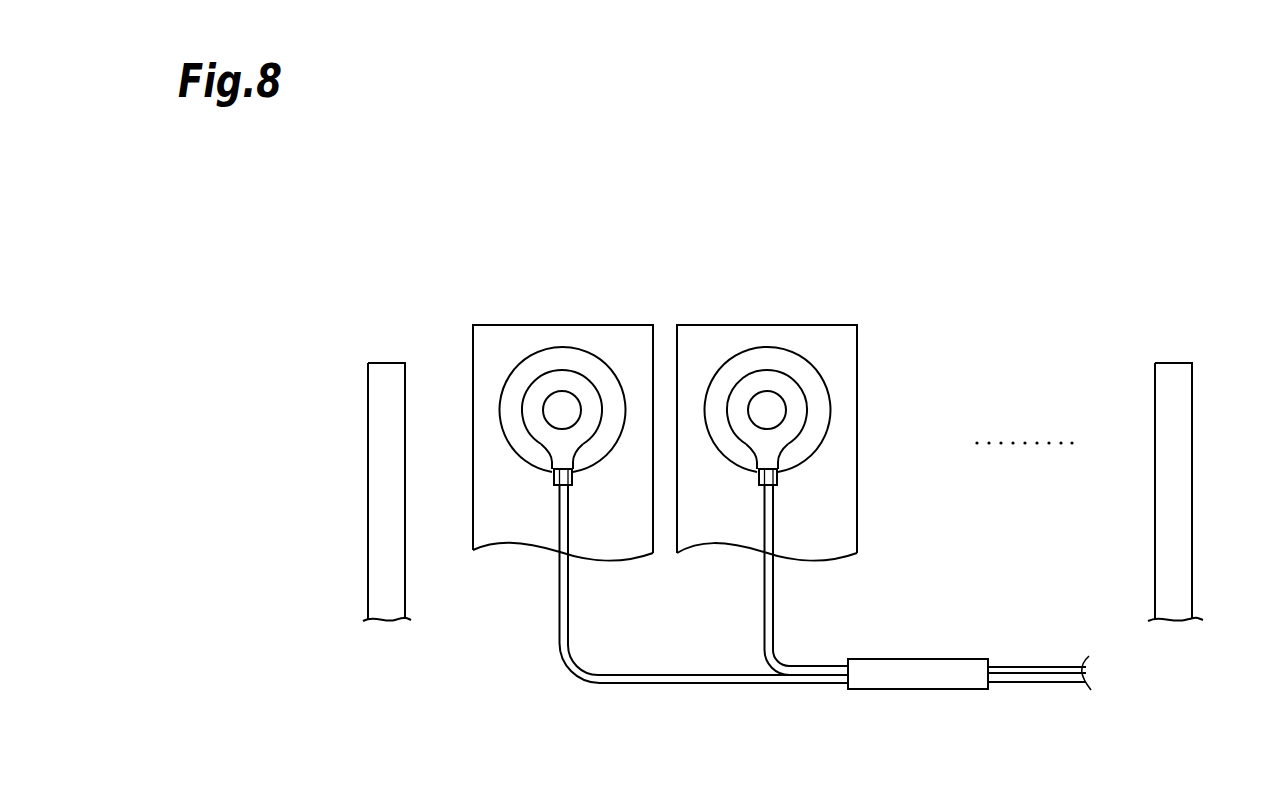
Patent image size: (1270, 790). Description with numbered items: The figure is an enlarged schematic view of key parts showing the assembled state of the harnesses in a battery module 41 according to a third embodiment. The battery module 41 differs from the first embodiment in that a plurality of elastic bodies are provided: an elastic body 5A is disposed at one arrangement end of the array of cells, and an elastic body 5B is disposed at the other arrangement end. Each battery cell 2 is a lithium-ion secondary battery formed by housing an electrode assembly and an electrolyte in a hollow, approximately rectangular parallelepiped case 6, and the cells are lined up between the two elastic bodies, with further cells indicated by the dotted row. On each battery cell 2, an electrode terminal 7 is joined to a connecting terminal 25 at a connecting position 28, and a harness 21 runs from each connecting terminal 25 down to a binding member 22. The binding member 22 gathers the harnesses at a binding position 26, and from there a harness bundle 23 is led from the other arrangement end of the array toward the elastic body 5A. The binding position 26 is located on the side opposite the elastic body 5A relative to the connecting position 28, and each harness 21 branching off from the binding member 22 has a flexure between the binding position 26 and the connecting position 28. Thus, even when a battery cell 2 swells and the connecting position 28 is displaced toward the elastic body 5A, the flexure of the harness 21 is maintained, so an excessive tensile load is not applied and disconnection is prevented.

The battery module 41 is at (335, 260).
The battery cell 2 is at (597, 324).
The electrode terminal 7 is at (505, 381).
The connecting terminal 25 is at (522, 415).
The connecting position 28 is at (554, 479).
The case 6 is at (472, 528).
The elastic body 5A is at (367, 404).
The elastic body 5B is at (1192, 408).
The harness 21 is at (558, 622).
The binding position 26 is at (847, 660).
The binding member 22 is at (958, 658).
The harness bundle 23 is at (1051, 646).